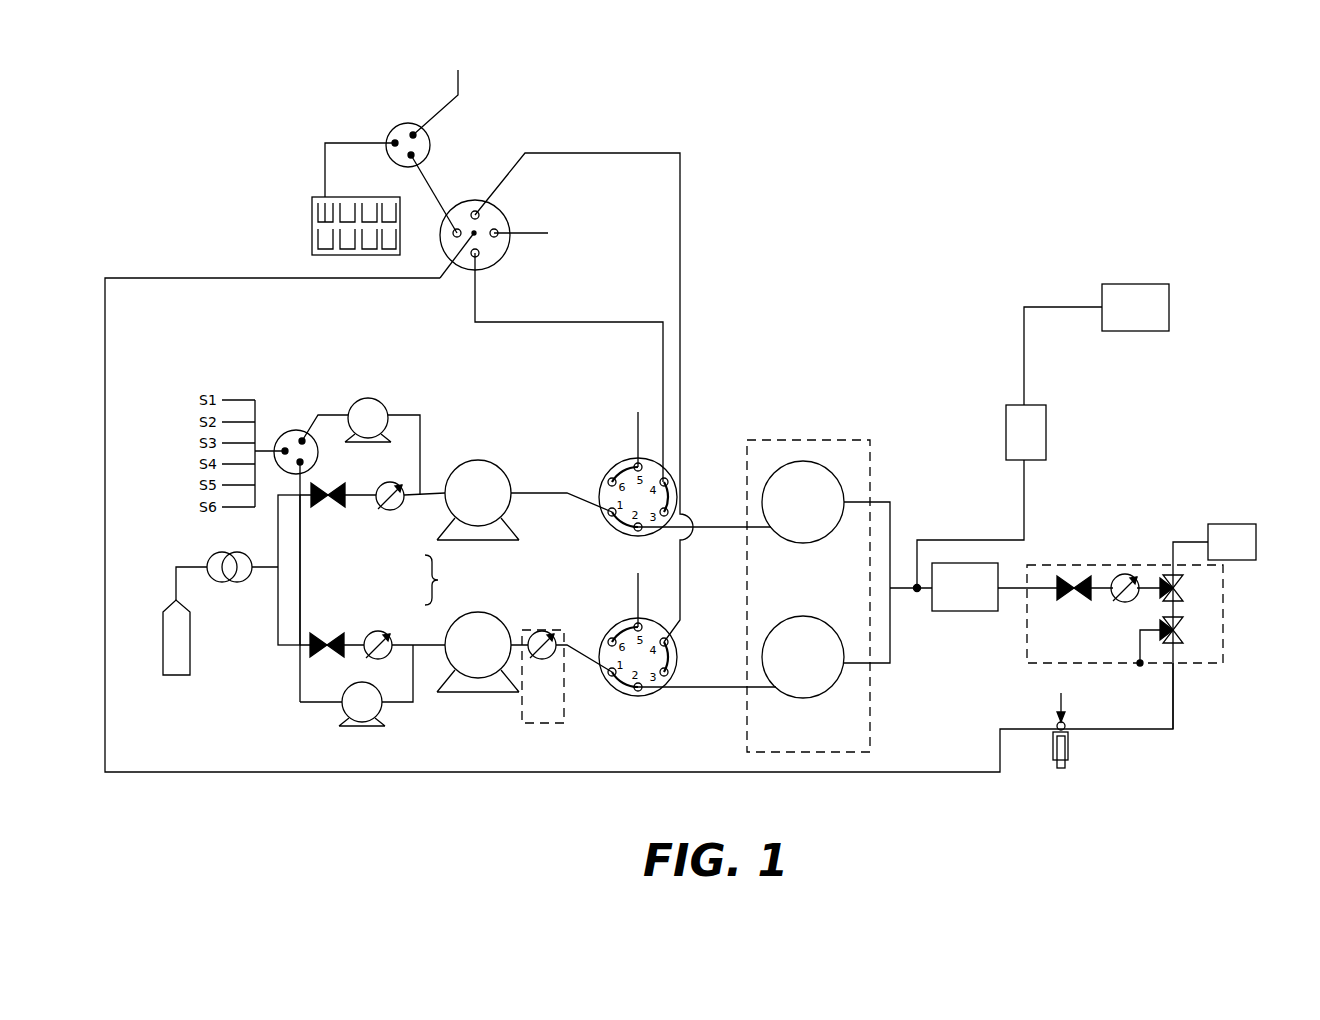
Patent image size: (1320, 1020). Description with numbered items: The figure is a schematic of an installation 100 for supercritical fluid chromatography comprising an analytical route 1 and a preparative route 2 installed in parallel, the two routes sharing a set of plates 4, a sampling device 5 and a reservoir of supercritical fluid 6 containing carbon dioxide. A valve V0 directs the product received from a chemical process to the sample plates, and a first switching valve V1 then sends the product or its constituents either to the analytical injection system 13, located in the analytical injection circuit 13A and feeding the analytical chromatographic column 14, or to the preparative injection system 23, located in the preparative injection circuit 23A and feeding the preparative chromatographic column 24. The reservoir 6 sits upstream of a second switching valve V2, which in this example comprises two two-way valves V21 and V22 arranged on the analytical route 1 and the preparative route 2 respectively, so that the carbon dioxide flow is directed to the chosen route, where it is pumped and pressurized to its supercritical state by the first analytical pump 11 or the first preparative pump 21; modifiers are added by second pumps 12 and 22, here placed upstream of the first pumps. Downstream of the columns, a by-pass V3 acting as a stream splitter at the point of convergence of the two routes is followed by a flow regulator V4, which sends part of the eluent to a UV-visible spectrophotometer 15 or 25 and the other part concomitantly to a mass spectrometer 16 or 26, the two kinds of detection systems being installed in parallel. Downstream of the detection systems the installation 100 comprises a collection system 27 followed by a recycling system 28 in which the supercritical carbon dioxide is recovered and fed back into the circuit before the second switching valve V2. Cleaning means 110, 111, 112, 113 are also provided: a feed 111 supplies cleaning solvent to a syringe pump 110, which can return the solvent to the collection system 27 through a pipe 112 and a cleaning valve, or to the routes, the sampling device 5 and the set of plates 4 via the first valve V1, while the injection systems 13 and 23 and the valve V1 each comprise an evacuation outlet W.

The installation 100 is at (880, 134).
The analytical route 1 is at (278, 535).
The preparative route 2 is at (278, 630).
The set of plates 4 is at (310, 225).
The sampling device 5 is at (323, 158).
The reservoir of supercritical fluid 6 is at (171, 608).
The first analytical pump 11 is at (478, 500).
The second pump 12 is at (380, 401).
The analytical injection system 13 is at (621, 469).
The analytical injection circuit 13A is at (521, 321).
The analytical chromatographic column 14 is at (803, 502).
The UV-visible spectrophotometer 15 is at (952, 611).
The mass spectrometer 16 is at (1187, 307).
The first preparative pump 21 is at (500, 667).
The second pump 22 is at (386, 709).
The preparative injection system 23 is at (614, 625).
The preparative injection circuit 23A is at (681, 288).
The preparative chromatographic column 24 is at (803, 657).
The UV-visible spectrophotometer 25 is at (993, 600).
The mass spectrometer 26 is at (1172, 312).
The collection system 27 is at (1226, 620).
The recycling system 28 is at (1232, 542).
The syringe pump 110 is at (1066, 770).
The feed of cleaning solvent 111 is at (1058, 708).
The pipe 112 is at (1163, 733).
The cleaning means 113 is at (917, 774).
The valve V0 is at (432, 146).
The first switching valve V1 is at (496, 222).
The second switching valve V2 is at (444, 580).
The two-way valve V21 is at (337, 500).
The two-way valve V22 is at (327, 637).
The by-pass V3 is at (917, 592).
The flow regulator V4 is at (1048, 440).